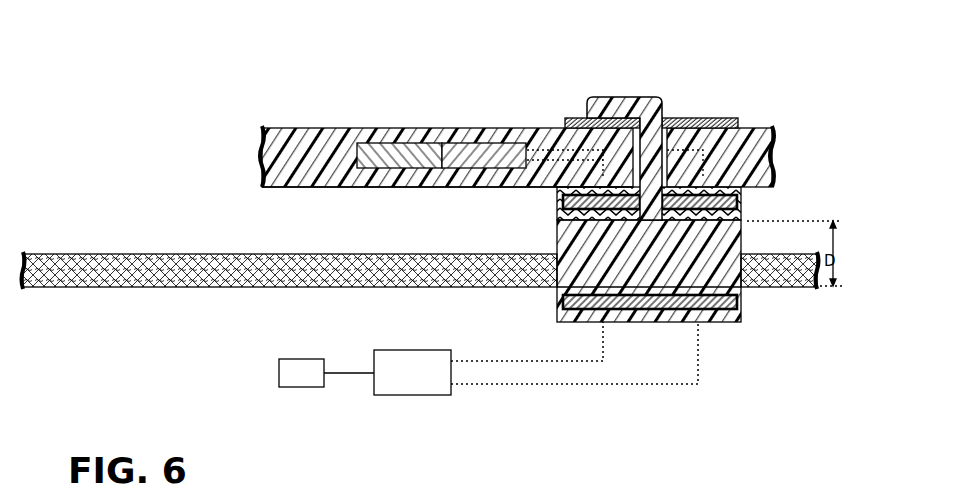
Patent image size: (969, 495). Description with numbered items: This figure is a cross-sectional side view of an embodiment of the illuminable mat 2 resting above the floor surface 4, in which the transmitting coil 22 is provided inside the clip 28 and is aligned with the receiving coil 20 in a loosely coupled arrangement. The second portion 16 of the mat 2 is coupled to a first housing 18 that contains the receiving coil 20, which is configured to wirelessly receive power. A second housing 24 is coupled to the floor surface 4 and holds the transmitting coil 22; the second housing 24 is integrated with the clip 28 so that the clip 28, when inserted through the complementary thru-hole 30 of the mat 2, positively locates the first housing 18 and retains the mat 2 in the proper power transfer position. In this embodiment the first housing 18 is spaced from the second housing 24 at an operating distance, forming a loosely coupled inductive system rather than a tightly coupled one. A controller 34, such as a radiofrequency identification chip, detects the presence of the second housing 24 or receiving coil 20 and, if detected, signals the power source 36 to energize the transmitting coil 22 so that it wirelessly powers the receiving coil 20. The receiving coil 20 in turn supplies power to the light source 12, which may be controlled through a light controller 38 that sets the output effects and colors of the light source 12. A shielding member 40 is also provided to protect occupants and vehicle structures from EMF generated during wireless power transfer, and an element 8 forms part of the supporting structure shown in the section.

The mat 2 is at (767, 127).
The floor surface 4 is at (157, 254).
The support member 8 is at (320, 127).
The light source 12 is at (420, 142).
The second portion 16 is at (330, 187).
The first housing 18 is at (560, 203).
The receiving coil 20 is at (740, 200).
The transmitting coil 22 is at (713, 310).
The second housing 24 is at (742, 313).
The clip 28 is at (608, 97).
The thru-hole 30 is at (688, 127).
The controller 34 is at (417, 388).
The power source 36 is at (302, 380).
The light controller 38 is at (470, 143).
The shielding member 40 is at (573, 117).